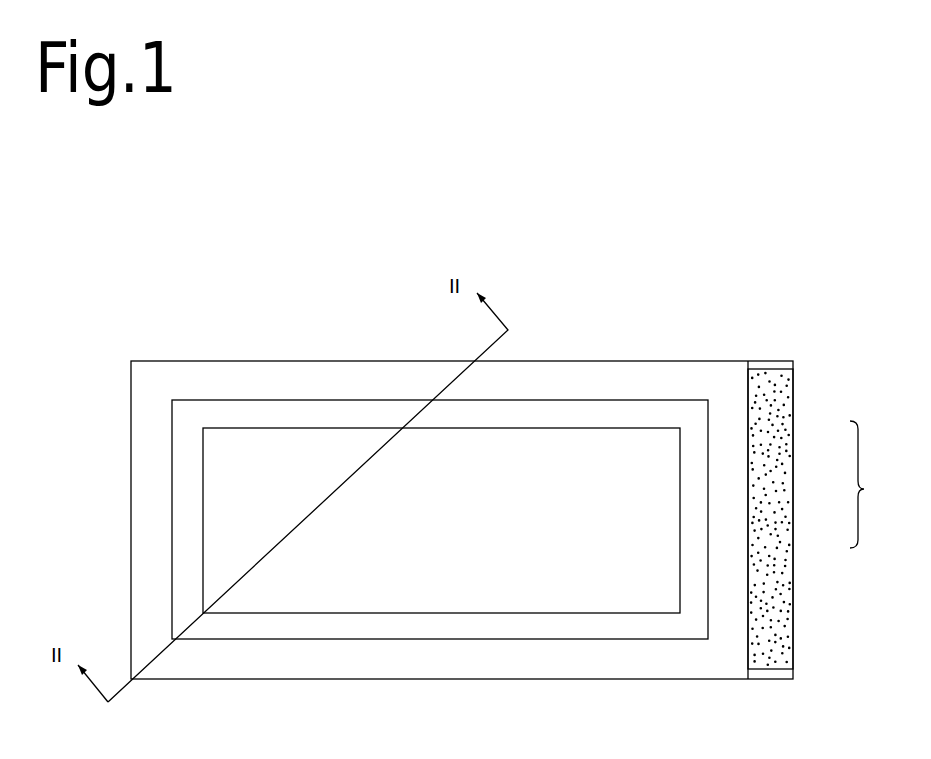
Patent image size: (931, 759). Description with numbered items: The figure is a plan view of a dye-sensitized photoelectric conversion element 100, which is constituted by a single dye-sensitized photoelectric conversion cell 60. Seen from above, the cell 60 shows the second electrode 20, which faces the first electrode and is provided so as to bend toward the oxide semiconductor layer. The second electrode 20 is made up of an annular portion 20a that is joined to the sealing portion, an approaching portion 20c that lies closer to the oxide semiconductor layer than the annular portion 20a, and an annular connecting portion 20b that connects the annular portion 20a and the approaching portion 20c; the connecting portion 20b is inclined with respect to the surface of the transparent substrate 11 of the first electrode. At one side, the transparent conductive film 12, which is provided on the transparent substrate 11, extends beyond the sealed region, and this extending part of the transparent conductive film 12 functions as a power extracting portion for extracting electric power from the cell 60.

The dye-sensitized photoelectric conversion element 100 is at (510, 412).
The dye-sensitized photoelectric conversion cell 60 is at (706, 357).
The second electrode 20 is at (870, 484).
The annular portion 20a is at (742, 452).
The connecting portion 20b is at (708, 508).
The approaching portion 20c is at (660, 547).
The transparent conductive film 12 is at (773, 638).
The transparent substrate 11 is at (783, 673).